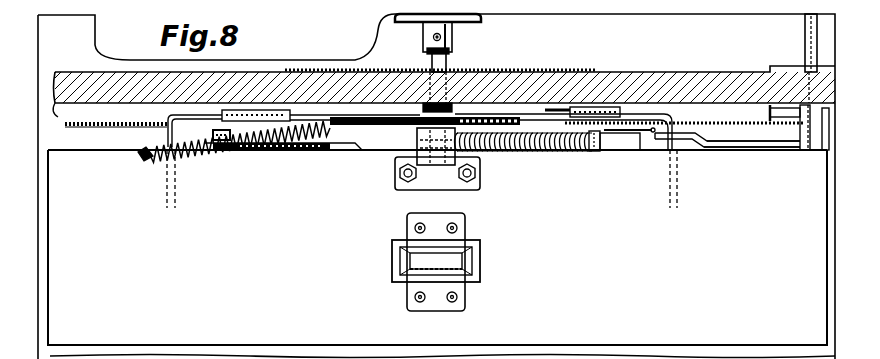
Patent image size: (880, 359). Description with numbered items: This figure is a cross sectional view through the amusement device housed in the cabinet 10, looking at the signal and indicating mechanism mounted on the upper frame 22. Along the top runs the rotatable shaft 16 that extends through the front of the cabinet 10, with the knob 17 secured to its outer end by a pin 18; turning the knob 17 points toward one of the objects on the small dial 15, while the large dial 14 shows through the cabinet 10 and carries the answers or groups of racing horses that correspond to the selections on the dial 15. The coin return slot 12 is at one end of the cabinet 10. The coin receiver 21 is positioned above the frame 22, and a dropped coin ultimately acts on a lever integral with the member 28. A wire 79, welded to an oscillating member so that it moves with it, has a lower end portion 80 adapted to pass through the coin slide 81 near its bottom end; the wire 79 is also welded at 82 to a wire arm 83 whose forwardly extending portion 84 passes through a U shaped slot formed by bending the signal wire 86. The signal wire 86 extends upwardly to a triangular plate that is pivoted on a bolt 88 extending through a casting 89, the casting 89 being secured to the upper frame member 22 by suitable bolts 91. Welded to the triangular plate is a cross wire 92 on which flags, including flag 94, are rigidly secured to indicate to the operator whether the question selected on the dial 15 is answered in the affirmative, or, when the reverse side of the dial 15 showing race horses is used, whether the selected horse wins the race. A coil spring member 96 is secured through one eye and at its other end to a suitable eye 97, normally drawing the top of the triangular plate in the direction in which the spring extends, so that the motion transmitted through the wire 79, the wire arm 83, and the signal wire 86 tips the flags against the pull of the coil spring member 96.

The cabinet 10 is at (436, 186).
The coin return slot 12 is at (808, 45).
The large dial 14 is at (142, 116).
The small dial 15 is at (549, 64).
The rotatable shaft 16 is at (448, 63).
The knob 17 is at (408, 22).
The pin 18 is at (443, 37).
The coin receiver 21 is at (480, 256).
The frame 22 is at (78, 154).
The member 28 is at (336, 150).
The wire 79 is at (769, 112).
The lower end portion 80 is at (824, 152).
The coin slide 81 is at (803, 151).
The weld 82 is at (740, 148).
The wire arm 83 is at (578, 108).
The forwardly extending portion 84 is at (616, 152).
The signal wire 86 is at (596, 151).
The bolt 88 is at (433, 167).
The casting 89 is at (418, 145).
The bolts 91 is at (402, 180).
The cross wire 92 is at (167, 133).
The flag 94 is at (256, 122).
The coil spring member 96 is at (218, 141).
The eye 97 is at (143, 160).